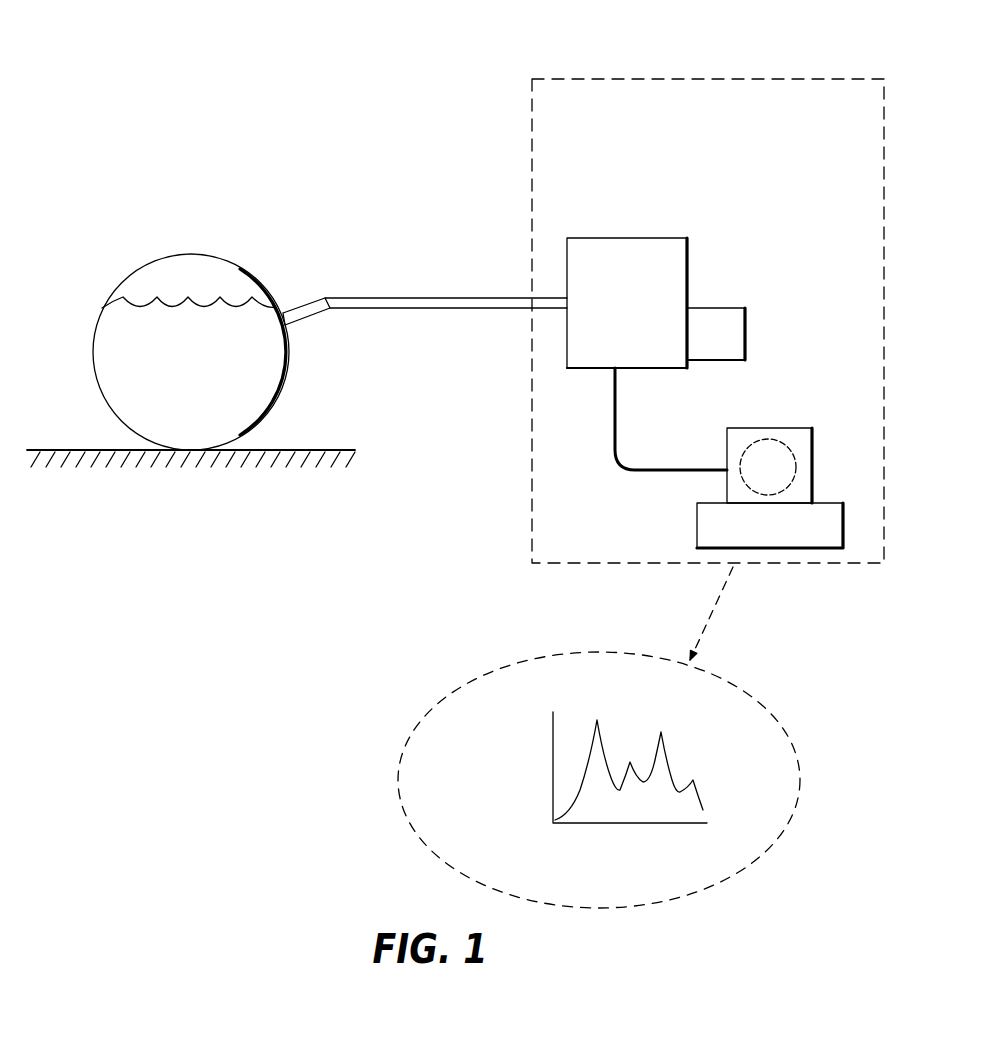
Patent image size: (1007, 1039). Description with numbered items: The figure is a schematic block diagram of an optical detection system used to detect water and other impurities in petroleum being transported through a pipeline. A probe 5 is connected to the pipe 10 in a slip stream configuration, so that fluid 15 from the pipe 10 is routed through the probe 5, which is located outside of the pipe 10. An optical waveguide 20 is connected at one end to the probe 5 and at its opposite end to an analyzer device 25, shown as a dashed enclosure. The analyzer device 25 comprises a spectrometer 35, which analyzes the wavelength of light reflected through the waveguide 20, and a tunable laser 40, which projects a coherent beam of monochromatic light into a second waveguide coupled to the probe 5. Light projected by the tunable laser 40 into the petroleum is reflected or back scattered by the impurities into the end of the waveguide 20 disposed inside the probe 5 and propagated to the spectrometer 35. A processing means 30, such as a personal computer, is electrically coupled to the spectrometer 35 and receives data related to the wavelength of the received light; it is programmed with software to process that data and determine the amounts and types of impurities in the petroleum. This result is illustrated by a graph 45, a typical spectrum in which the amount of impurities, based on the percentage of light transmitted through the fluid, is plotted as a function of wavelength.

The probe 5 is at (315, 320).
The pipe 10 is at (225, 262).
The fluid 15 is at (195, 384).
The optical waveguide 20 is at (436, 288).
The analyzer device 25 is at (733, 78).
The processing means 30 is at (823, 455).
The spectrometer 35 is at (626, 232).
The tunable laser 40 is at (758, 334).
The graph 45 is at (712, 773).